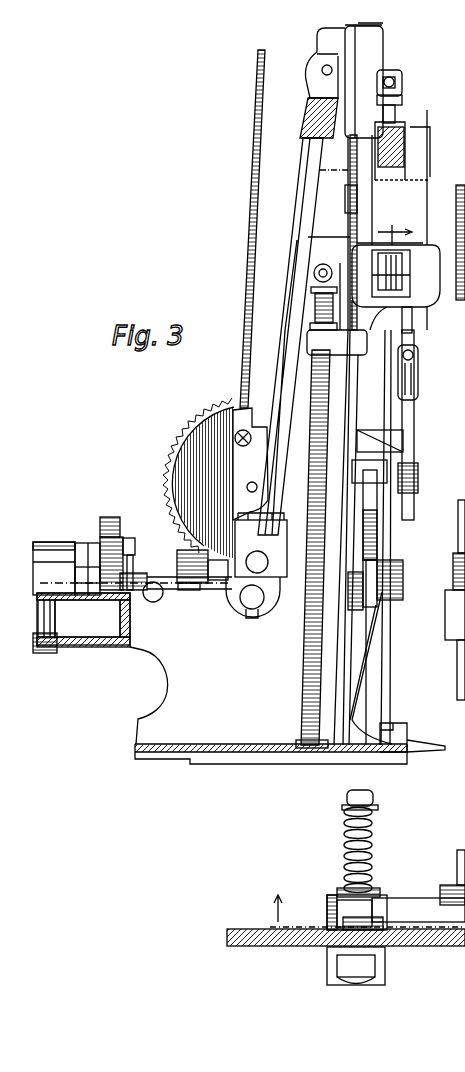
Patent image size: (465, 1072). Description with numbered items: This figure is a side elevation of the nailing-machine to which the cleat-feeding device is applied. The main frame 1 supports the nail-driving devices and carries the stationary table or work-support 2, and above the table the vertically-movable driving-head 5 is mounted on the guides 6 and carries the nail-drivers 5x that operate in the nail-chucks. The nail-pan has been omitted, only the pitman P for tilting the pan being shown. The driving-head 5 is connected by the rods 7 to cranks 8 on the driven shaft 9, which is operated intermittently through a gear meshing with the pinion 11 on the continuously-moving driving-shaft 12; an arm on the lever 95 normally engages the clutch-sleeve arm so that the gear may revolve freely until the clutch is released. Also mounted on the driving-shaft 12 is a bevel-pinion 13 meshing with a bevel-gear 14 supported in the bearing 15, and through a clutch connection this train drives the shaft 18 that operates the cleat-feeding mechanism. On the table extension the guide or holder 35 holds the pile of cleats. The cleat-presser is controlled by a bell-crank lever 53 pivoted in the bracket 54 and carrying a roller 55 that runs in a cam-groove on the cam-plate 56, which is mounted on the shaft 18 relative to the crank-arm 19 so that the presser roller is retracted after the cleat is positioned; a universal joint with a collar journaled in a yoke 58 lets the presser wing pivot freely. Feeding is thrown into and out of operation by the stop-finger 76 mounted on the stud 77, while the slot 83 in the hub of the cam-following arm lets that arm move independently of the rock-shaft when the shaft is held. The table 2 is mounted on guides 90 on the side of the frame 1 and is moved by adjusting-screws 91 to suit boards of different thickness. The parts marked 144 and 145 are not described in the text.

The main frame 1 is at (430, 940).
The stationary table or work-support 2 is at (430, 252).
The vertically-movable driving-head 5 is at (383, 52).
The nail-drivers 5x is at (402, 125).
The guides 6 is at (368, 24).
The rods 7 is at (283, 402).
The cranks 8 is at (464, 245).
The driven shaft 9 is at (252, 600).
The pinion 11 is at (167, 437).
The driving-shaft 12 is at (153, 596).
The bevel-pinion 13 is at (97, 648).
The bevel-gear 14 is at (150, 545).
The bearing 15 is at (390, 915).
The shaft 18 is at (382, 594).
The crank-arm 19 is at (395, 231).
The guide or holder 35 is at (367, 220).
The bell-crank lever 53 is at (385, 490).
The bracket 54 is at (365, 452).
The roller 55 is at (387, 550).
The cam-plate 56 is at (397, 572).
The yoke 58 is at (418, 375).
The stop-finger 76 is at (333, 905).
The stud 77 is at (373, 846).
The slot 83 is at (444, 600).
The guides 90 is at (352, 398).
The adjusting-screws 91 is at (290, 336).
The lever 95 is at (422, 745).
The mechanism 144 is at (394, 273).
The stem 145 is at (410, 340).
The pitman P is at (234, 229).